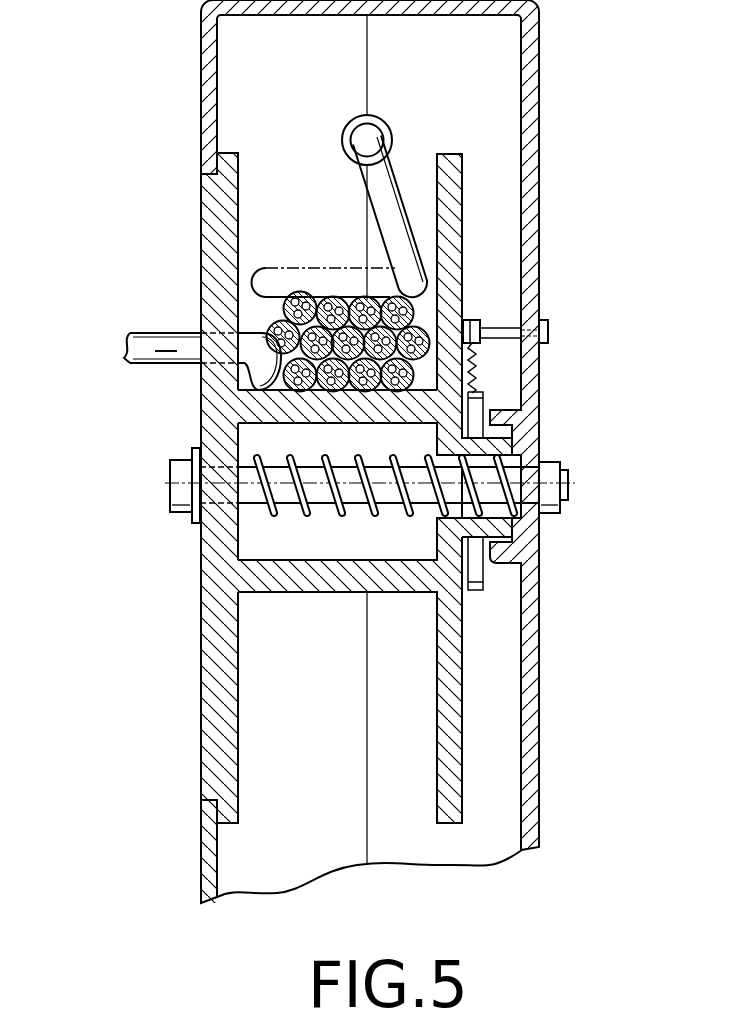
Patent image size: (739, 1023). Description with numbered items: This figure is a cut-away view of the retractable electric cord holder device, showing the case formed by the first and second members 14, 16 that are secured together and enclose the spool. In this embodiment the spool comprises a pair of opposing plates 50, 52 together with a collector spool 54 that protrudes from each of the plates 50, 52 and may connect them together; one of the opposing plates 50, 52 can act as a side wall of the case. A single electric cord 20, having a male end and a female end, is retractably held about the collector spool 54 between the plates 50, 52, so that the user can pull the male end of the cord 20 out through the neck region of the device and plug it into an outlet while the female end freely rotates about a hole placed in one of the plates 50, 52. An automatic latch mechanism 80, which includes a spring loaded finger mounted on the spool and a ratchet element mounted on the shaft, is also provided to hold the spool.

The first member 14 is at (203, 82).
The second member 16 is at (540, 50).
The first electric cord 20 is at (402, 158).
The opposing plate 50 is at (170, 724).
The opposing plate 52 is at (488, 743).
The collector spool 54 is at (403, 625).
The automatic latch mechanism 80 is at (492, 374).